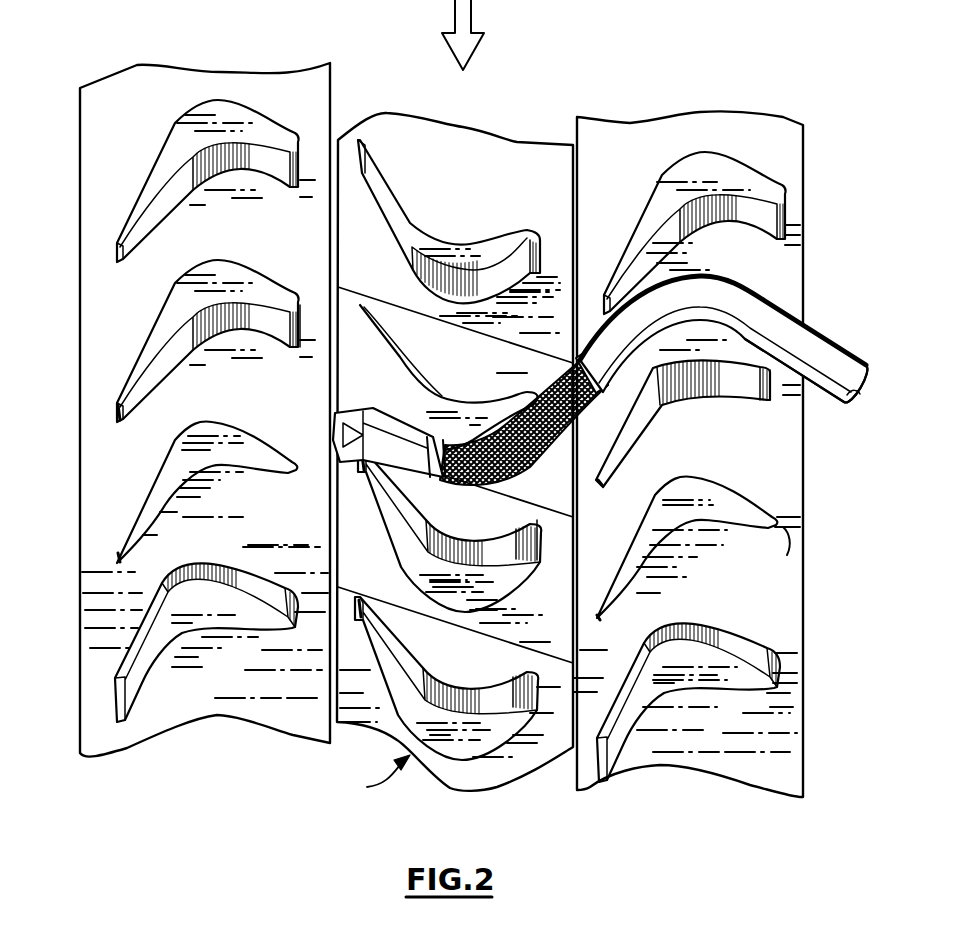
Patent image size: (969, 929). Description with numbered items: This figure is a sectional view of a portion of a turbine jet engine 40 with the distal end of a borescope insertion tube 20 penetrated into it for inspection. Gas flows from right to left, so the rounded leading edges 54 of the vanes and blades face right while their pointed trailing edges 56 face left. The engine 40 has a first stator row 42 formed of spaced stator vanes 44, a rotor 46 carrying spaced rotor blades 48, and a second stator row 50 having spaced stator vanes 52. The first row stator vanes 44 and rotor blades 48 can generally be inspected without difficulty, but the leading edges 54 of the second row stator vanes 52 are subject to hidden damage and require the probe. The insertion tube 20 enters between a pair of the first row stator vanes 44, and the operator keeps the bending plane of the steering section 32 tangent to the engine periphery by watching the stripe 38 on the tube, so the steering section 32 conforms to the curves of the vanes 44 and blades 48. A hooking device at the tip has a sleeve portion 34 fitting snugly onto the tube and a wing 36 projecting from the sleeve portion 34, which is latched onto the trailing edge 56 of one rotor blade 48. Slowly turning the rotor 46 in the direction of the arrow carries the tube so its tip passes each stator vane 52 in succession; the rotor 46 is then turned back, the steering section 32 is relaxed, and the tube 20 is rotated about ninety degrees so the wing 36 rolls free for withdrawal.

The borescope insertion tube 20 is at (733, 300).
The steering section 32 is at (550, 467).
The sleeve portion 34 is at (397, 410).
The wing 36 is at (335, 440).
The stripe 38 is at (810, 330).
The jet engine 40 is at (371, 778).
The first stator row 42 is at (773, 730).
The stator vanes 44 is at (650, 207).
The rotor 46 is at (490, 773).
The rotor blades 48 is at (460, 248).
The second stator row 50 is at (330, 102).
The stator vanes 52 is at (255, 130).
The leading edges 54 is at (303, 338).
The trailing edges 56 is at (117, 555).